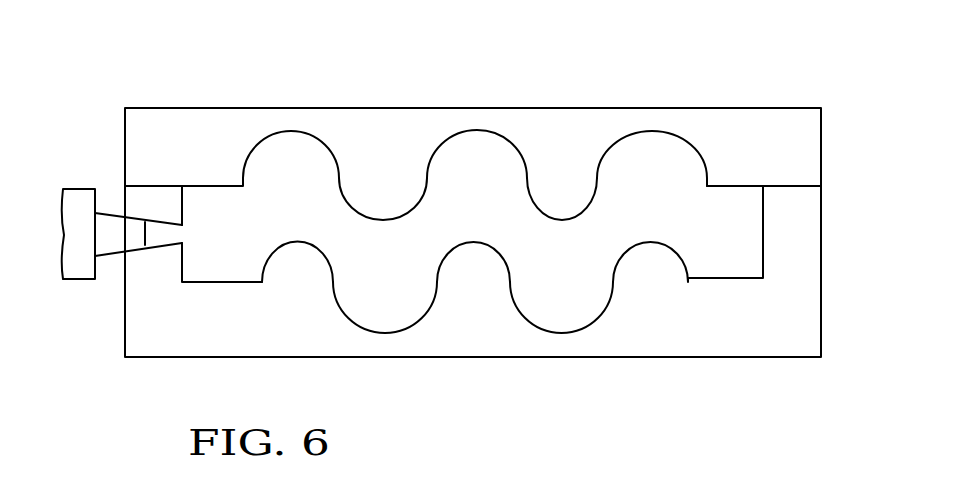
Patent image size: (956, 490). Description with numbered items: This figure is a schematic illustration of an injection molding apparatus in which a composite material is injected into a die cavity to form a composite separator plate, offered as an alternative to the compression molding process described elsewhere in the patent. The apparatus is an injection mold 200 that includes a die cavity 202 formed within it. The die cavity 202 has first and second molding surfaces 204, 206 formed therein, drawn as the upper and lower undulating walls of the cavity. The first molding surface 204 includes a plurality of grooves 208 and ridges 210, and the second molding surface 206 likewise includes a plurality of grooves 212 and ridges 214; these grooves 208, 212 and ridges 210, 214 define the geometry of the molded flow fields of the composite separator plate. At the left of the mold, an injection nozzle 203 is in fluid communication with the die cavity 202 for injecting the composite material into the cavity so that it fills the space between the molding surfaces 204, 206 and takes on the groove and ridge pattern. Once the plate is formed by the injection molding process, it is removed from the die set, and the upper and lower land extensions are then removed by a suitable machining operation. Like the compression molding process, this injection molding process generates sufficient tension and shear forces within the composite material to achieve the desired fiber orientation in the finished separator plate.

The injection mold 200 is at (846, 88).
The die cavity 202 is at (216, 241).
The injection nozzle 203 is at (77, 270).
The first molding surface 204 is at (359, 235).
The second molding surface 206 is at (537, 243).
The grooves 208 is at (287, 166).
The ridges 210 is at (388, 193).
The grooves 212 is at (376, 311).
The ridges 214 is at (295, 267).